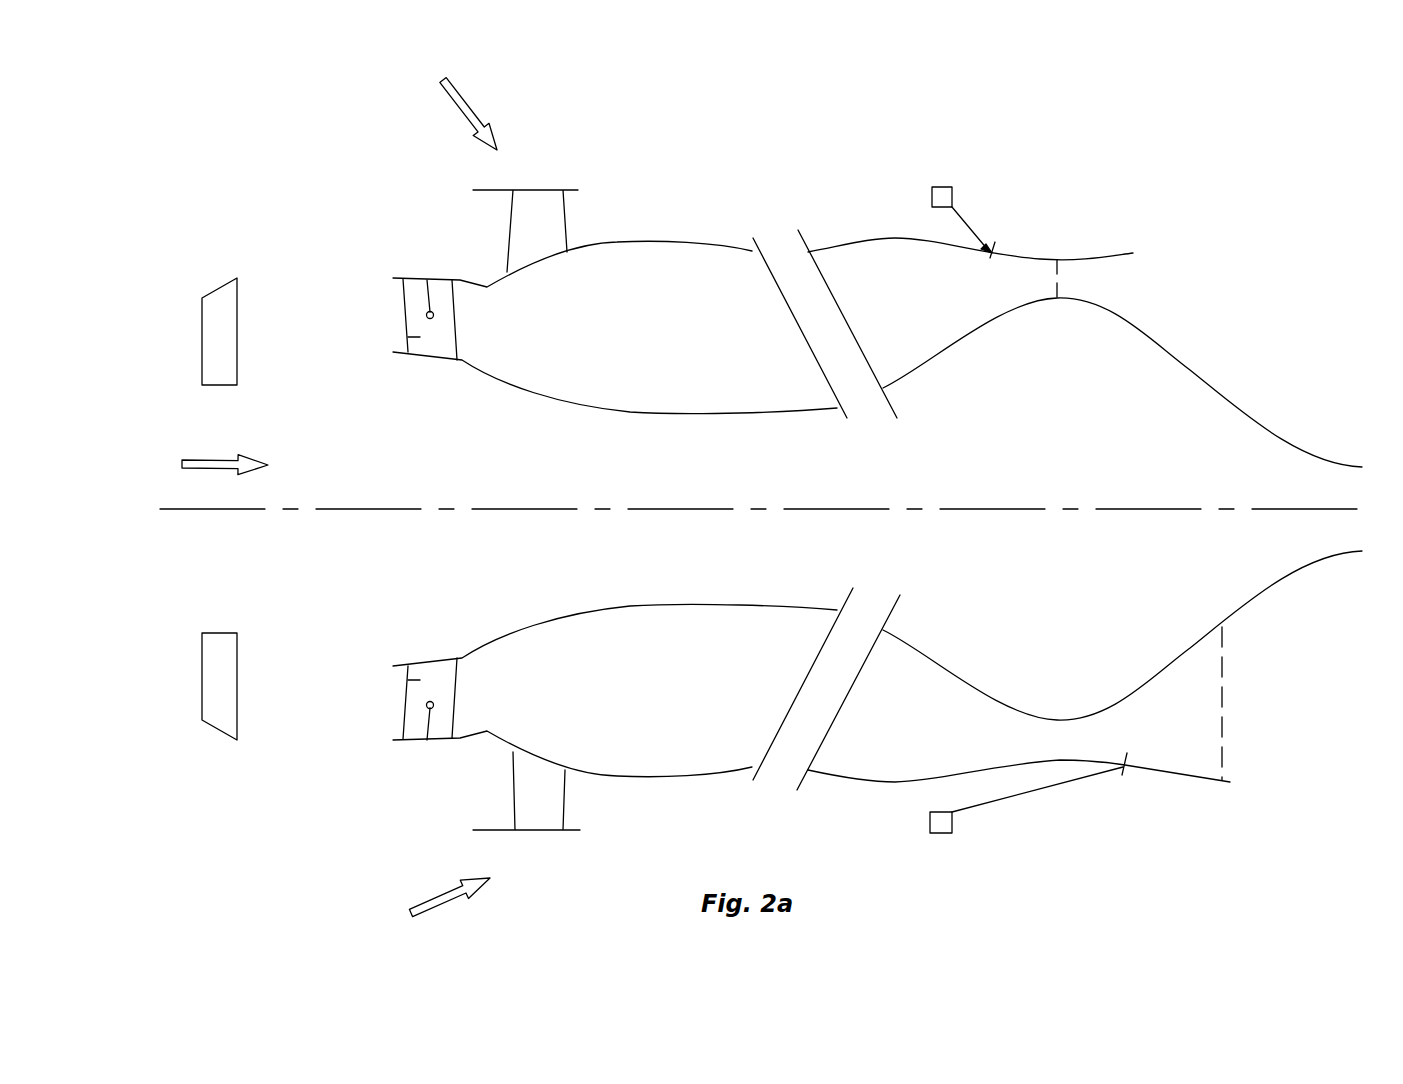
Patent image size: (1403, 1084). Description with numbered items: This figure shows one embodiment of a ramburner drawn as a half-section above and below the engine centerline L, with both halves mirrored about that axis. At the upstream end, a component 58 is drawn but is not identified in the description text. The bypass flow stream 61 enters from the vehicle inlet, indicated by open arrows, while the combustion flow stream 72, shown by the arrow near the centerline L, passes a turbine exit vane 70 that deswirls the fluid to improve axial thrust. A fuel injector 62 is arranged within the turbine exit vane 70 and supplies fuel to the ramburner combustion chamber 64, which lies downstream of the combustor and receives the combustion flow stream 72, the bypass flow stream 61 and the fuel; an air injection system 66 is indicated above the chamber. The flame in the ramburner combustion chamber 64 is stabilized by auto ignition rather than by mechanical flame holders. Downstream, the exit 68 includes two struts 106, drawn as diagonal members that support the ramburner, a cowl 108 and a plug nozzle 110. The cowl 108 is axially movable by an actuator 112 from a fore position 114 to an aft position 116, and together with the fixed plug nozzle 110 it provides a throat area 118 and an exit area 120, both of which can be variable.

The inlet guide vane 58 is at (200, 323).
The bypass flow stream 61 is at (465, 96).
The fuel injector 62 is at (426, 315).
The ramburner combustion chamber 64 is at (576, 323).
The air injection system 66 is at (570, 140).
The exit 68 is at (1150, 132).
The turbine exit vane 70 is at (408, 337).
The combustion flow stream 72 is at (183, 460).
The strut 106 is at (790, 317).
The cowl 108 is at (1004, 254).
The plug nozzle 110 is at (1227, 395).
The actuator 112 is at (932, 193).
The fore position 114 is at (1117, 252).
The aft position 116 is at (1223, 780).
The throat area 118 is at (1050, 260).
The exit area 120 is at (1223, 698).
The centerline L is at (322, 509).